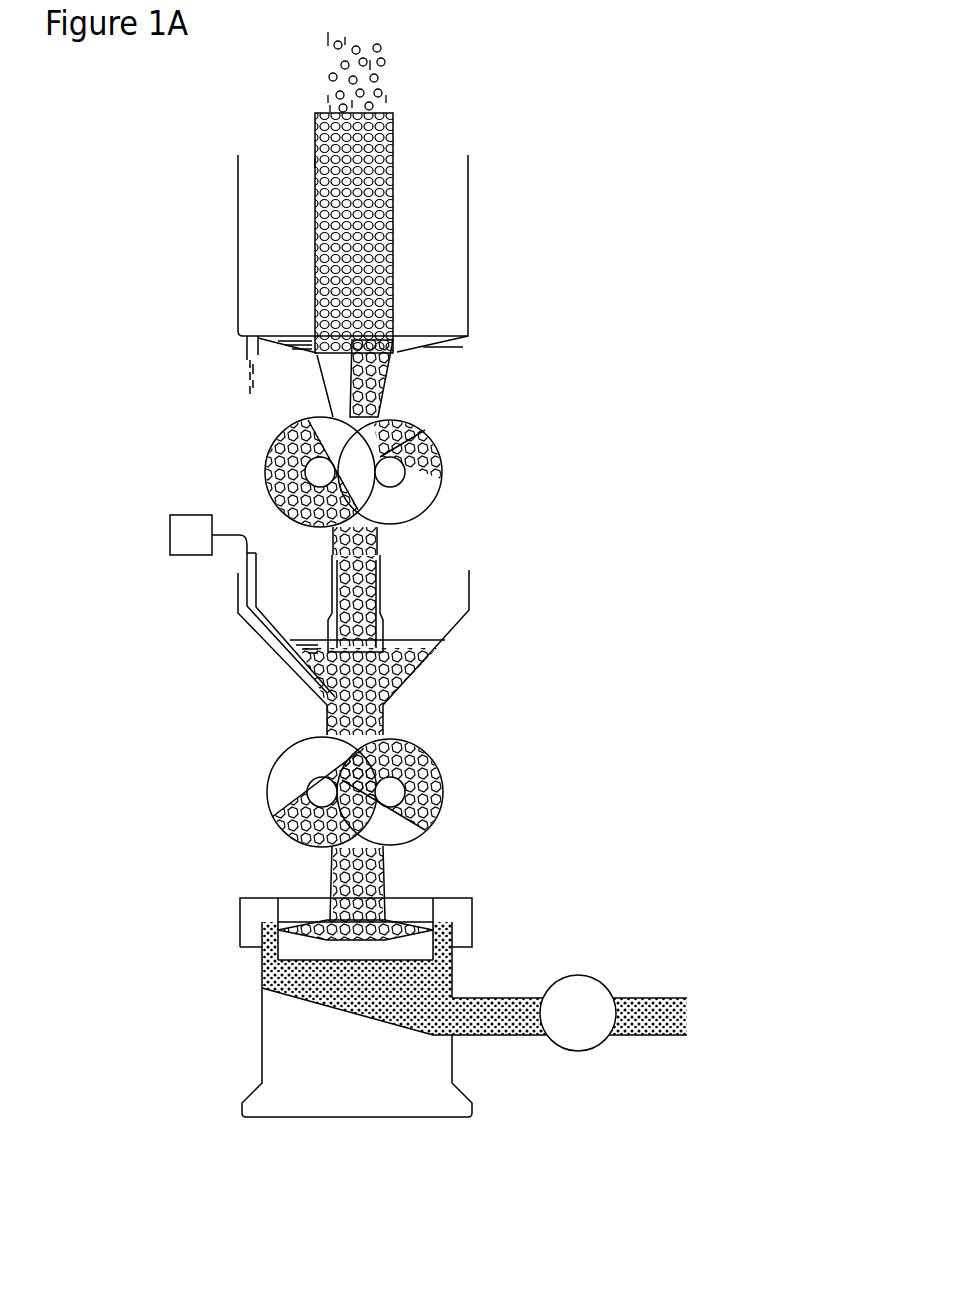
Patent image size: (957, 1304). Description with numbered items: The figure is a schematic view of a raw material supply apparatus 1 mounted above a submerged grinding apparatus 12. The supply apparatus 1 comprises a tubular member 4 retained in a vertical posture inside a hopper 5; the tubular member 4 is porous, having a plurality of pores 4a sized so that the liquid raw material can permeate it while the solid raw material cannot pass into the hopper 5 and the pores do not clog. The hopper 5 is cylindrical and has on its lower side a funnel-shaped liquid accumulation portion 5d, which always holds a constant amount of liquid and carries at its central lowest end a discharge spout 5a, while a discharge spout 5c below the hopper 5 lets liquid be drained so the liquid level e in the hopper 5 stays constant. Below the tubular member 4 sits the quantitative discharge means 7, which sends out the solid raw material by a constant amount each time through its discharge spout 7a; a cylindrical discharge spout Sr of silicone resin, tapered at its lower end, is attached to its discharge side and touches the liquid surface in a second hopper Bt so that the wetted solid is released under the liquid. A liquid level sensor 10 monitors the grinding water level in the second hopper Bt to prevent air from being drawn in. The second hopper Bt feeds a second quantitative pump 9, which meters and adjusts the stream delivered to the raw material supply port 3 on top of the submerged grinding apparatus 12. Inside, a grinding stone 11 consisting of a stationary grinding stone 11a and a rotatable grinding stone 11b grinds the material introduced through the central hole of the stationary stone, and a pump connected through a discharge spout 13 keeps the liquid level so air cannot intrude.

The raw material supply apparatus 1 is at (468, 195).
The tubular member 4 is at (393, 133).
The pores 4a is at (315, 160).
The hopper 5 is at (237, 203).
The discharge spout 5a is at (385, 381).
The discharge spout 5c is at (245, 345).
The liquid accumulation portion 5d is at (463, 347).
The quantitative discharge means 7 is at (425, 433).
The discharge spout 7a is at (377, 541).
The cylindrical discharge spout Sr is at (332, 580).
The liquid level sensor 10 is at (170, 532).
The second hopper Bt is at (242, 618).
The liquid level e is at (413, 640).
The second quantitative pump 9 is at (443, 782).
The raw material supply port 3 is at (385, 855).
The grinding stone 11 is at (98, 850).
The stationary grinding stone 11a is at (283, 910).
The rotatable grinding stone 11b is at (283, 937).
The submerged grinding apparatus 12 is at (283, 1048).
The discharge spout 13 is at (493, 997).